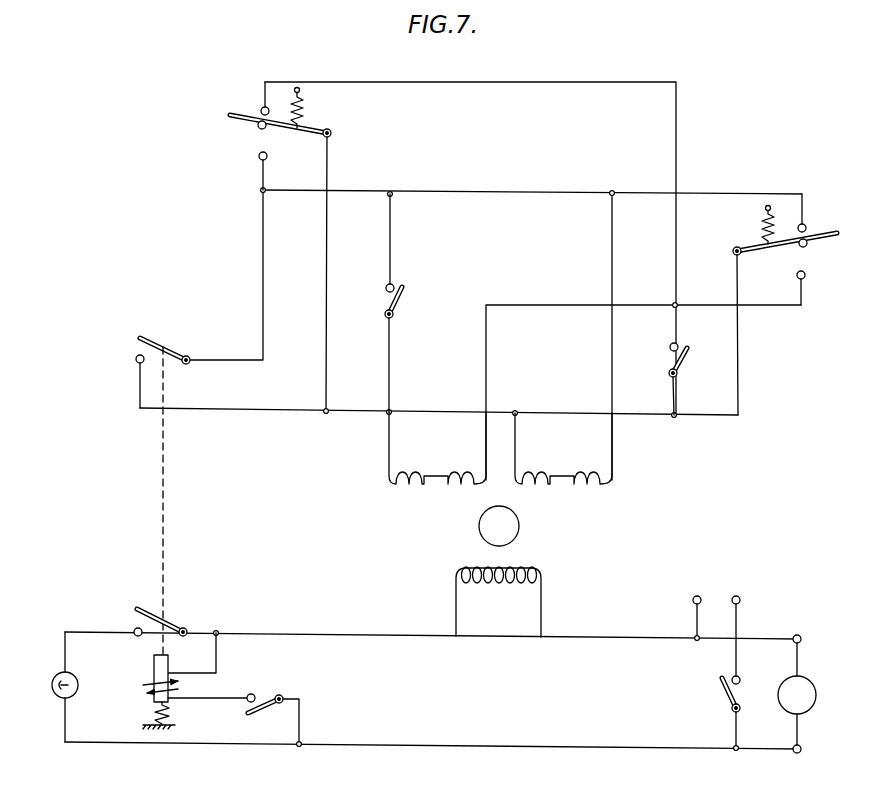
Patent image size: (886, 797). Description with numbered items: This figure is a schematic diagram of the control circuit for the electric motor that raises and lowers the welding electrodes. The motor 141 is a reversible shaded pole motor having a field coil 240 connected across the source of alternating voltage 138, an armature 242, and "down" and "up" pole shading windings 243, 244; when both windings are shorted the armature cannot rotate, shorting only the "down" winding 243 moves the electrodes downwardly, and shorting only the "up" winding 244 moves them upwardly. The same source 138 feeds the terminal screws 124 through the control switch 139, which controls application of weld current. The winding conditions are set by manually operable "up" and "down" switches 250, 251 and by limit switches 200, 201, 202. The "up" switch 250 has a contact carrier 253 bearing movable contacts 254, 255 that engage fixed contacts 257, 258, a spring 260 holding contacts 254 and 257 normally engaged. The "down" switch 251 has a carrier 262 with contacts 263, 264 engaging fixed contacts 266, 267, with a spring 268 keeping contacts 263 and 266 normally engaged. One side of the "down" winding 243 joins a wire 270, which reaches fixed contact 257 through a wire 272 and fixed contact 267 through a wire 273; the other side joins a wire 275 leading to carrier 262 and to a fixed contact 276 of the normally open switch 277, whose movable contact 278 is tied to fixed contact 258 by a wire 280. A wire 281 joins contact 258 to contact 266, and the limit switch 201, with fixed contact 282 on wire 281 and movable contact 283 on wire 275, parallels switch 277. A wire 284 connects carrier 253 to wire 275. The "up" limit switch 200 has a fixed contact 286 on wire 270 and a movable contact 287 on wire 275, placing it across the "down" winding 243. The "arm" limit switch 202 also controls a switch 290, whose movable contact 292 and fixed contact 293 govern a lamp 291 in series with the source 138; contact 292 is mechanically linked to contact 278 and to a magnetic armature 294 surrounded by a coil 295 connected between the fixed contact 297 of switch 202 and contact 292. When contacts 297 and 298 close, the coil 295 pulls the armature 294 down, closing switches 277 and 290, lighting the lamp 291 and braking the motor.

The terminal screws 124 is at (699, 596).
The source of alternating voltage 138 is at (811, 680).
The control switch 139 is at (722, 696).
The motor 141 is at (534, 526).
The "up" limit switch 200 is at (683, 342).
The limit switch 201 is at (396, 283).
The "arm" limit switch 202 is at (281, 689).
The field coil 240 is at (482, 584).
The armature 242 is at (482, 528).
The "down" pole shading winding 243 is at (432, 474).
The "up" pole shading winding 244 is at (557, 474).
The "up" switch 250 is at (226, 120).
The "down" switch 251 is at (802, 259).
The contact carrier 253 is at (282, 130).
The movable contact 254 is at (253, 116).
The movable contact 255 is at (256, 127).
The fixed contact 257 is at (262, 106).
The fixed contact 258 is at (260, 160).
The spring 260 is at (300, 102).
The carrier 262 is at (772, 254).
The contact 263 is at (813, 234).
The contact 264 is at (810, 247).
The fixed contact 266 is at (807, 224).
The fixed contact 267 is at (804, 282).
The spring 268 is at (762, 224).
The wire 270 is at (583, 304).
The wire 272 is at (611, 82).
The wire 273 is at (760, 305).
The wire 275 is at (345, 415).
The fixed contact 276 is at (135, 362).
The normally open switch 277 is at (136, 347).
The movable contact 278 is at (168, 347).
The wire 280 is at (263, 263).
The wire 281 is at (503, 192).
The fixed contact 282 is at (386, 288).
The movable contact 283 is at (401, 300).
The wire 284 is at (326, 316).
The fixed contact 286 is at (669, 347).
The movable contact 287 is at (684, 359).
The switch 290 is at (134, 621).
The lamp 291 is at (58, 697).
The movable contact 292 is at (179, 621).
The fixed contact 293 is at (136, 637).
The magnetic armature 294 is at (164, 666).
The coil 295 is at (144, 685).
The fixed contact 297 is at (248, 693).
The contact 298 is at (253, 710).